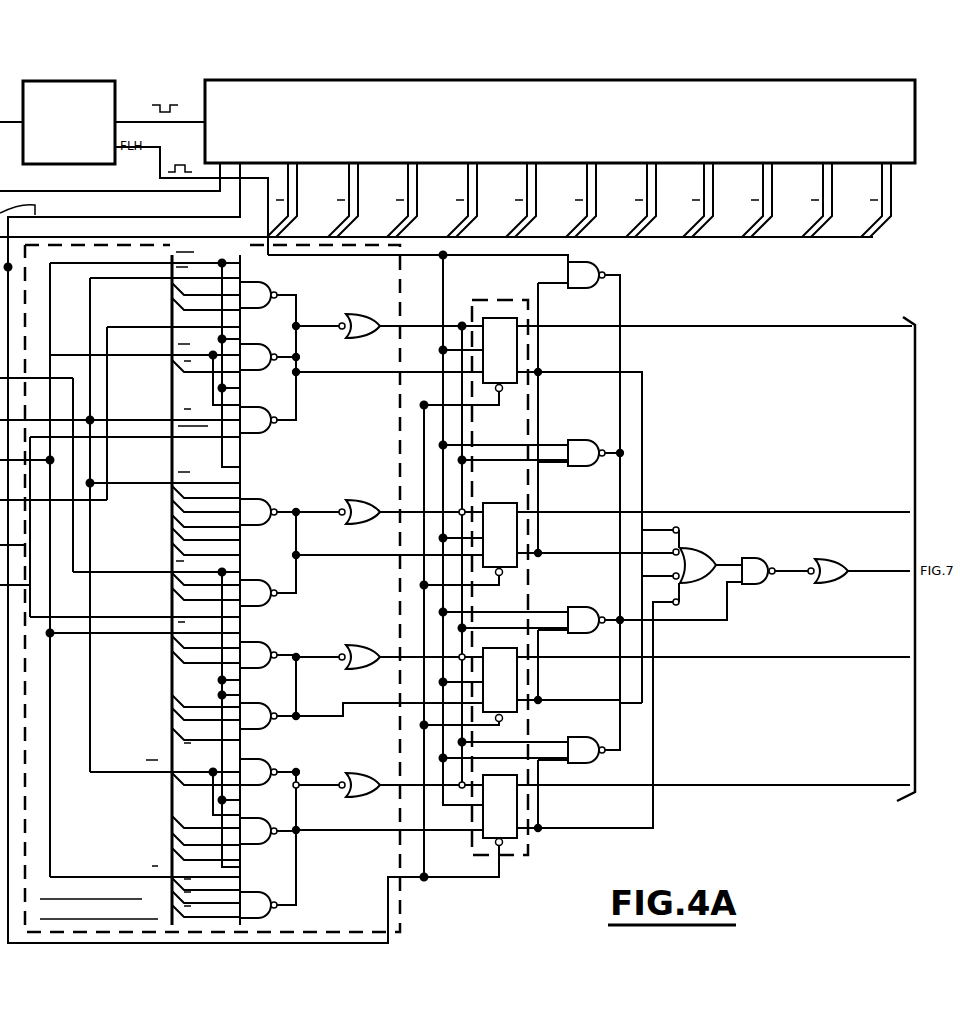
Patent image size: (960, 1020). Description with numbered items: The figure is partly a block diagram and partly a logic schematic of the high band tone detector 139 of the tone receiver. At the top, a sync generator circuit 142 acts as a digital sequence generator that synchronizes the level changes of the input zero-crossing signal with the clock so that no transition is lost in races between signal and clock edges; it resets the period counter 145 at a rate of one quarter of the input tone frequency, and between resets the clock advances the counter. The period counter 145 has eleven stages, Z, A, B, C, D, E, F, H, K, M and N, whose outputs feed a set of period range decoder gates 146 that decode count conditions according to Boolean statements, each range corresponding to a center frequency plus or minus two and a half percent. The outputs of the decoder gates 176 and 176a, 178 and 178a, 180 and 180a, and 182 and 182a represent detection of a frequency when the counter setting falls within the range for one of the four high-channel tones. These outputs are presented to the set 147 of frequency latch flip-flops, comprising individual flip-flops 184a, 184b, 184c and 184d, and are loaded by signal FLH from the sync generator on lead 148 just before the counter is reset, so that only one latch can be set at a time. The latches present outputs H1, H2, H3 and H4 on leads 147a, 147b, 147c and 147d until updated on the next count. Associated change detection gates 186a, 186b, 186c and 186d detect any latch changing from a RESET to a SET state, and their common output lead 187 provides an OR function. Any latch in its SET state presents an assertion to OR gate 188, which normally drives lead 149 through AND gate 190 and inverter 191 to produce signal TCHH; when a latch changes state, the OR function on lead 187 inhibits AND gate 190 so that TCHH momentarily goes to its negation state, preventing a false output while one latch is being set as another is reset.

The high band tone detector 139 is at (430, 62).
The sync generator circuit 142 is at (60, 80).
The period counter 145 is at (590, 80).
The period range decoder gates 146 is at (200, 588).
The frequency latch flip-flops 147 is at (490, 300).
The lead 147a is at (705, 324).
The lead 147b is at (672, 510).
The lead 147c is at (725, 660).
The lead 147d is at (700, 783).
The lead 148 is at (266, 200).
The lead 149 is at (858, 575).
The period range decoder gate 176 is at (378, 323).
The period range decoder gate 176a is at (375, 375).
The period range decoder gate 178 is at (370, 500).
The period range decoder gate 178a is at (378, 558).
The period range decoder gate 180 is at (372, 647).
The period range decoder gate 180a is at (372, 708).
The period range decoder gate 182 is at (375, 795).
The period range decoder gate 182a is at (372, 838).
The frequency latch flip-flop 184a is at (510, 388).
The frequency latch flip-flop 184b is at (508, 574).
The frequency latch flip-flop 184c is at (515, 636).
The frequency latch flip-flop 184d is at (517, 808).
The change detection gate 186a is at (605, 262).
The change detection gate 186b is at (600, 440).
The change detection gate 186c is at (608, 635).
The change detection gate 186d is at (590, 760).
The common output lead 187 is at (620, 485).
The OR gate 188 is at (700, 548).
The AND gate 190 is at (755, 556).
The inverter 191 is at (825, 558).